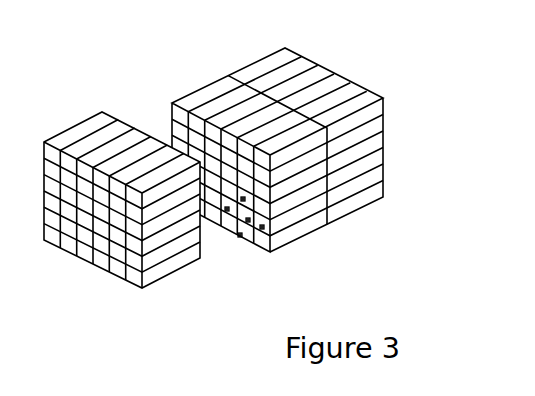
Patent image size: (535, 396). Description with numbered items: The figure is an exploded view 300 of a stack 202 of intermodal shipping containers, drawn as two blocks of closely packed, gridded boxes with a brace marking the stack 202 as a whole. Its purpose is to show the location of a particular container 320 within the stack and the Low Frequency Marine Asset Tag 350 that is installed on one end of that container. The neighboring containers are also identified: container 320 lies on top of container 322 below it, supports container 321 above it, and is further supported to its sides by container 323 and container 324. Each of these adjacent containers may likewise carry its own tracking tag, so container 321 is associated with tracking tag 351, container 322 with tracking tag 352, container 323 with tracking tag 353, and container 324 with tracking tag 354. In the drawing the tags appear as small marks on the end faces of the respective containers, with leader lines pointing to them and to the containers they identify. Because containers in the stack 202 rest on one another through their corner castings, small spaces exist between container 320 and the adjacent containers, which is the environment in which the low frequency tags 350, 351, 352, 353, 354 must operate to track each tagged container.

The stack 202 is at (286, 42).
The exploded view 300 is at (251, 186).
The container 320 is at (250, 225).
The container 321 is at (250, 203).
The container 322 is at (237, 239).
The container 323 is at (228, 212).
The container 324 is at (266, 230).
The Low Frequency Marine Asset Tag 350 is at (251, 223).
The tracking tag 351 is at (246, 200).
The tracking tag 352 is at (241, 238).
The tracking tag 353 is at (225, 208).
The tracking tag 354 is at (265, 226).